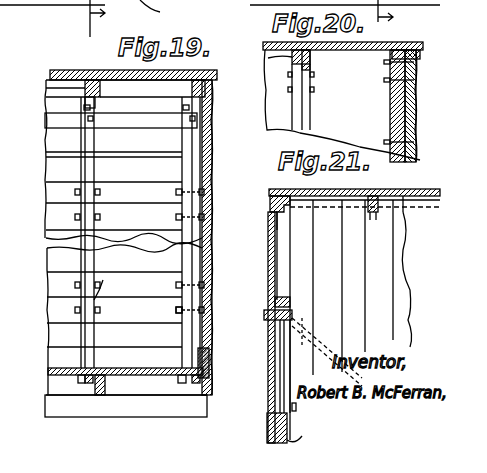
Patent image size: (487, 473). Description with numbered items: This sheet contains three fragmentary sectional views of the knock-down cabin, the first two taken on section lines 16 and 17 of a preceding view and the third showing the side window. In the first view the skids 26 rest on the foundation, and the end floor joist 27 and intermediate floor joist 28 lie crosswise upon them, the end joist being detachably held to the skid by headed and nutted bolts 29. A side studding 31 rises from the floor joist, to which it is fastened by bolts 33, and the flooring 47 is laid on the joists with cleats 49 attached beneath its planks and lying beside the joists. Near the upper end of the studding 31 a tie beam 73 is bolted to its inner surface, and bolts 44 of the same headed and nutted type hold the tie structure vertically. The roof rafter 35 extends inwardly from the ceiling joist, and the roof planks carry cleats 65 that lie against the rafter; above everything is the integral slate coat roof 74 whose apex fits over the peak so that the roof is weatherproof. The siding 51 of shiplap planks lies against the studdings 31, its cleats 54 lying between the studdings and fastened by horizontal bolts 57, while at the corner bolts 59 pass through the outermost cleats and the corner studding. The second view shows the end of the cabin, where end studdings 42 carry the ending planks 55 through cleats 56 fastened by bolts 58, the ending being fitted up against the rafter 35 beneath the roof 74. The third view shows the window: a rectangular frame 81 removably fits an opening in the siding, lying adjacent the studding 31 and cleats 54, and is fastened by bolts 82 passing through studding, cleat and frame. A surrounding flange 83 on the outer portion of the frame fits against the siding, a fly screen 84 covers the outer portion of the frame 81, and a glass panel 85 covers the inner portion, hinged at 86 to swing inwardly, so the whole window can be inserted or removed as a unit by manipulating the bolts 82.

In FIG. 19, the section line 16 is at (92, 32).
In FIG. 20, the section line 17 is at (345, 12).
In FIG. 19, the skids 26 is at (52, 408).
In FIG. 19, the end floor joists 27 is at (210, 364).
In FIG. 19, the intermediate floor joists 28 is at (101, 397).
In FIG. 19, the headed and nutted bolts 29 is at (150, 6).
In FIG. 19, the side studding 31 is at (193, 150).
In FIG. 21, the side studding 31 is at (292, 203).
In FIG. 19, the headed and nutted bolts 33 is at (178, 381).
In FIG. 19, the roof rafter 35 is at (100, 88).
In FIG. 20, the roof rafter 35 is at (322, 60).
In FIG. 20, the end studdings 42 is at (390, 106).
In FIG. 21, the end studdings 42 is at (380, 200).
In FIG. 19, the headed and nutted bolts 44 is at (190, 121).
In FIG. 19, the flooring 47 is at (60, 370).
In FIG. 21, the flooring 47 is at (404, 300).
In FIG. 19, the cleats 49 is at (88, 385).
In FIG. 21, the sidings 51 is at (423, 189).
In FIG. 19, the cleats 54 is at (180, 197).
In FIG. 21, the cleats 54 is at (276, 214).
In FIG. 20, the planks 55 is at (417, 109).
In FIG. 19, the cleats 56 is at (209, 144).
In FIG. 20, the cleats 56 is at (419, 93).
In FIG. 21, the cleats 56 is at (270, 198).
In FIG. 19, the headed and nutted bolts 57 is at (97, 290).
In FIG. 21, the headed and nutted bolts 57 is at (272, 443).
In FIG. 21, the headed and nutted bolts 58 is at (372, 220).
In FIG. 19, the headed and nutted bolts 59 is at (177, 311).
In FIG. 21, the headed and nutted bolts 59 is at (270, 243).
In FIG. 19, the cleats 65 is at (82, 86).
In FIG. 20, the cleats 65 is at (293, 58).
In FIG. 19, the tie beams 73 is at (55, 121).
In FIG. 19, the slate coat roof 74 is at (82, 70).
In FIG. 20, the slate coat roof 74 is at (372, 43).
In FIG. 21, the window frame 81 is at (283, 319).
In FIG. 21, the headed and nutted bolts 82 is at (278, 300).
In FIG. 21, the surrounding flange 83 is at (272, 424).
In FIG. 21, the fly screen 84 is at (272, 384).
In FIG. 21, the glass panel 85 is at (288, 350).
In FIG. 21, the hinge 86 is at (292, 322).